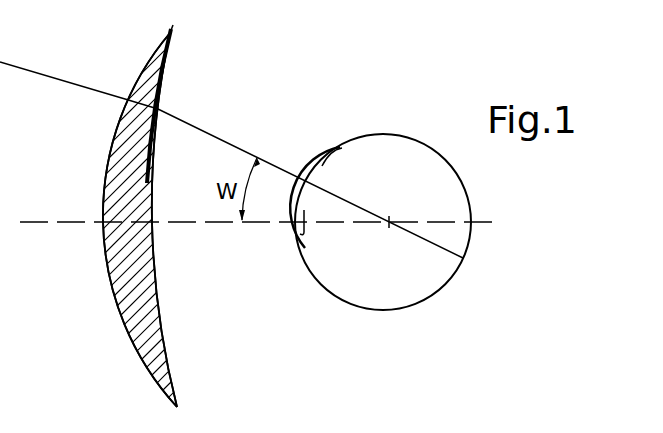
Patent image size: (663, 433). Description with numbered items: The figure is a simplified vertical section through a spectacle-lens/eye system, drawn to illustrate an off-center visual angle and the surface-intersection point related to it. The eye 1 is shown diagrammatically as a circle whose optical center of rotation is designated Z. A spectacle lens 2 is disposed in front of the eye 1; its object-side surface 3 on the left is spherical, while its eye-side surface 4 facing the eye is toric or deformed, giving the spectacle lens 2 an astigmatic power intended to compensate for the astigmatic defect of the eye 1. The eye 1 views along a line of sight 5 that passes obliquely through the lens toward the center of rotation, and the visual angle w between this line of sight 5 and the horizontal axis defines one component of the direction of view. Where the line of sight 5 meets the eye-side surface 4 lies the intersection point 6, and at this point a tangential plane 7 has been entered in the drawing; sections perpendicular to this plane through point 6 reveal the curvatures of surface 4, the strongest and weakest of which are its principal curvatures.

The eye 1 is at (471, 198).
The spectacle lens 2 is at (162, 347).
The object-side surface 3 is at (113, 315).
The eye-side surface 4 is at (157, 314).
The line of sight 5 is at (224, 140).
The intersection point 6 is at (159, 108).
The tangential plane 7 is at (172, 30).